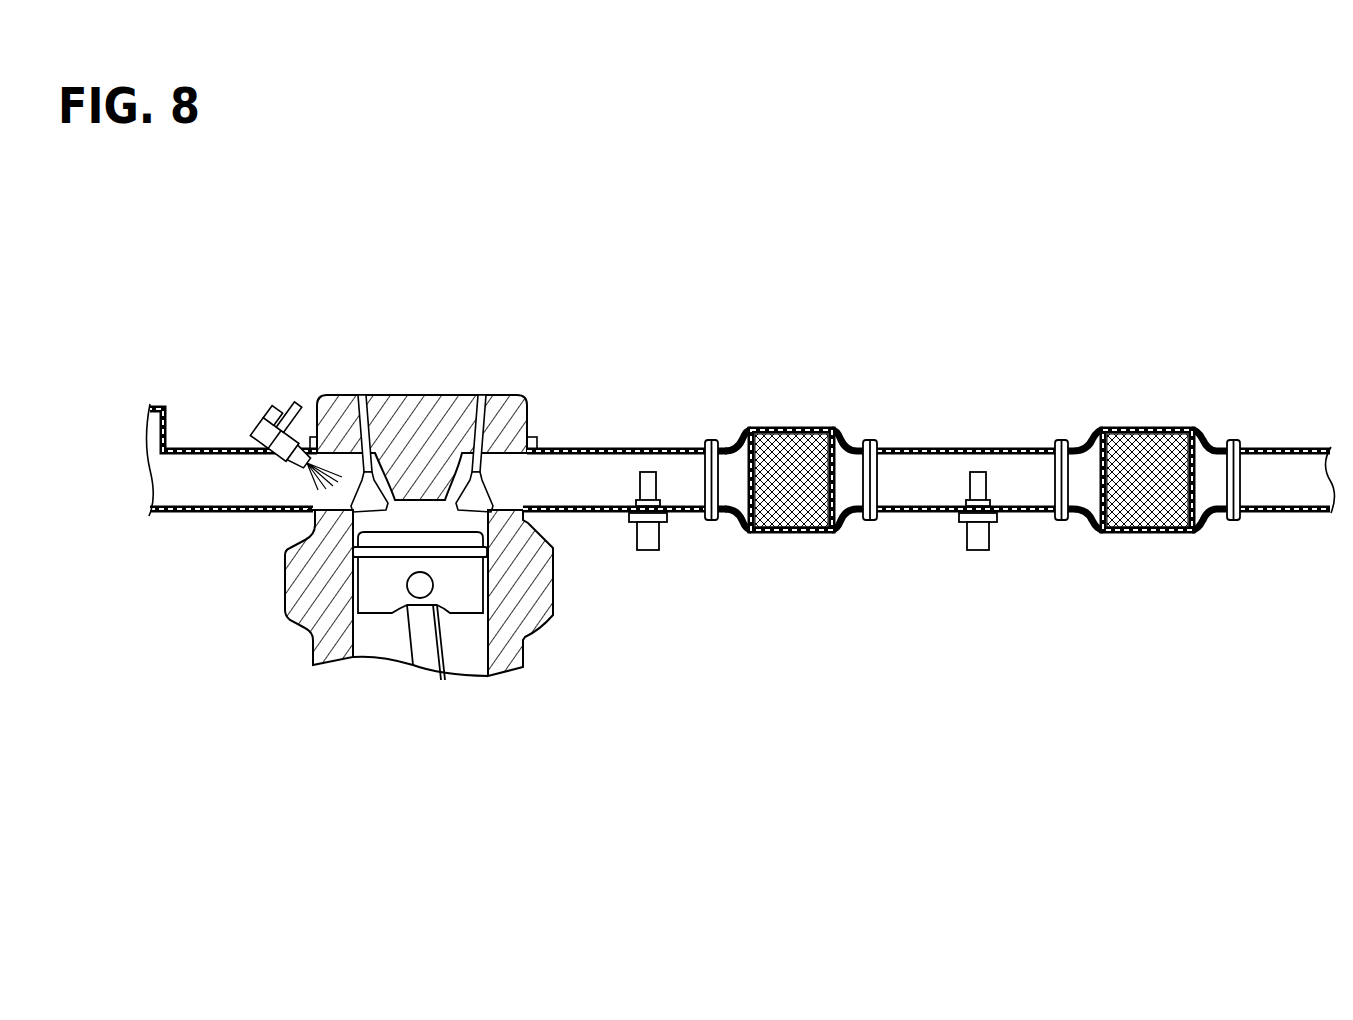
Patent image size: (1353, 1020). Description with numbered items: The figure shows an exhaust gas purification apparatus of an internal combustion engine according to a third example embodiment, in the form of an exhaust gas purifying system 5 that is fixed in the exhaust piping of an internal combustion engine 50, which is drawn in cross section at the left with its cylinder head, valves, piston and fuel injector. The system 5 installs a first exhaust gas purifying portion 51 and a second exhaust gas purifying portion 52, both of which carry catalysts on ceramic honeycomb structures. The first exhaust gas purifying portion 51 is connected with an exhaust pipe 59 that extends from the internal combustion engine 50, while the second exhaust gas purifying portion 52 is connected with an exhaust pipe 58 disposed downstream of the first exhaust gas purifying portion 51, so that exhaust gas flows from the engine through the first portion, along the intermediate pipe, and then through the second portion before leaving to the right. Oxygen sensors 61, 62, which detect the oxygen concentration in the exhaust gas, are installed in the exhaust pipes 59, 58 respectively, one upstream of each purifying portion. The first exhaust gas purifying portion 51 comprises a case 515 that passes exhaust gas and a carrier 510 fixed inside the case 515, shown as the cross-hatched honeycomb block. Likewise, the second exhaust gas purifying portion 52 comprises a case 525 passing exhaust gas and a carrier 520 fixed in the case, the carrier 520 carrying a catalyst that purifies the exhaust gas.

The exhaust gas purifying system 5 is at (929, 387).
The internal combustion engine 50 is at (423, 378).
The first exhaust gas purifying portion 51 is at (792, 483).
The second exhaust gas purifying portion 52 is at (1186, 477).
The exhaust pipe 58 is at (1012, 447).
The exhaust pipe 59 is at (610, 445).
The oxygen sensor 61 is at (648, 535).
The oxygen sensor 62 is at (977, 533).
The carrier 510 is at (775, 533).
The case 515 is at (807, 532).
The carrier 520 is at (1147, 490).
The case 525 is at (1190, 533).